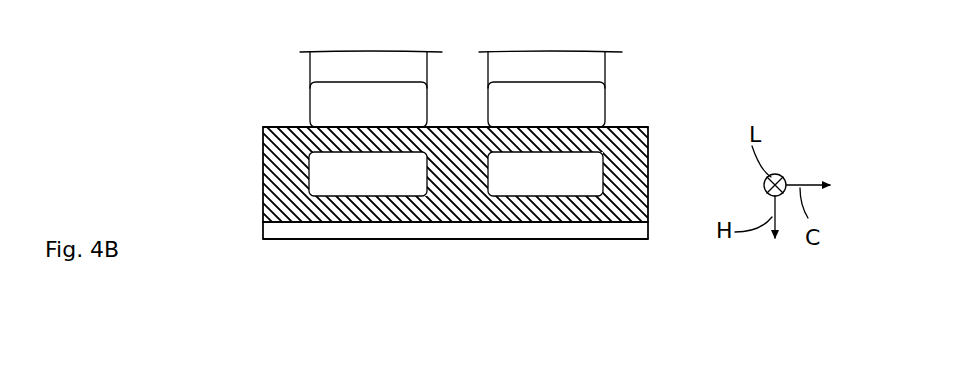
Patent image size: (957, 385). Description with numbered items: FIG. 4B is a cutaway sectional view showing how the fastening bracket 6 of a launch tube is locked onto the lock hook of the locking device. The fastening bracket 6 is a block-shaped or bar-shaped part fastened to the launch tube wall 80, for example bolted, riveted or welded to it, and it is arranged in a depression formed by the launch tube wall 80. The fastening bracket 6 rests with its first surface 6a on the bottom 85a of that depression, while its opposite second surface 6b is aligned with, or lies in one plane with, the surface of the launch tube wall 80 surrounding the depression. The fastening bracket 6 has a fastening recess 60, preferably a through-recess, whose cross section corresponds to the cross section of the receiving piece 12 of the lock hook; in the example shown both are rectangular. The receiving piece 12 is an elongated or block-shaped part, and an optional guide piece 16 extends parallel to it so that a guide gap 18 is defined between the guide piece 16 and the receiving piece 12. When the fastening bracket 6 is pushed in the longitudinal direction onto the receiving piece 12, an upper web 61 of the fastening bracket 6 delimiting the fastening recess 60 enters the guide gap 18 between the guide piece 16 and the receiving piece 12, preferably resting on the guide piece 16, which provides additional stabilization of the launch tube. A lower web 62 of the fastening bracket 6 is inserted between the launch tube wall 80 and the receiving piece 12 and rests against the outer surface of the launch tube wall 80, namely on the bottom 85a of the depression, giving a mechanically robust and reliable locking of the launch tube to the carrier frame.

The fastening bracket 6 is at (256, 205).
The first surface 6a is at (282, 233).
The second surface 6b is at (468, 126).
The receiving piece 12 is at (364, 185).
The guide piece 16 is at (383, 92).
The guide gap 18 is at (334, 124).
The fastening recess 60 is at (263, 167).
The upper web 61 is at (287, 127).
The lower web 62 is at (320, 220).
The launch tube wall 80 is at (480, 231).
The bottom of the depression 85a is at (450, 223).